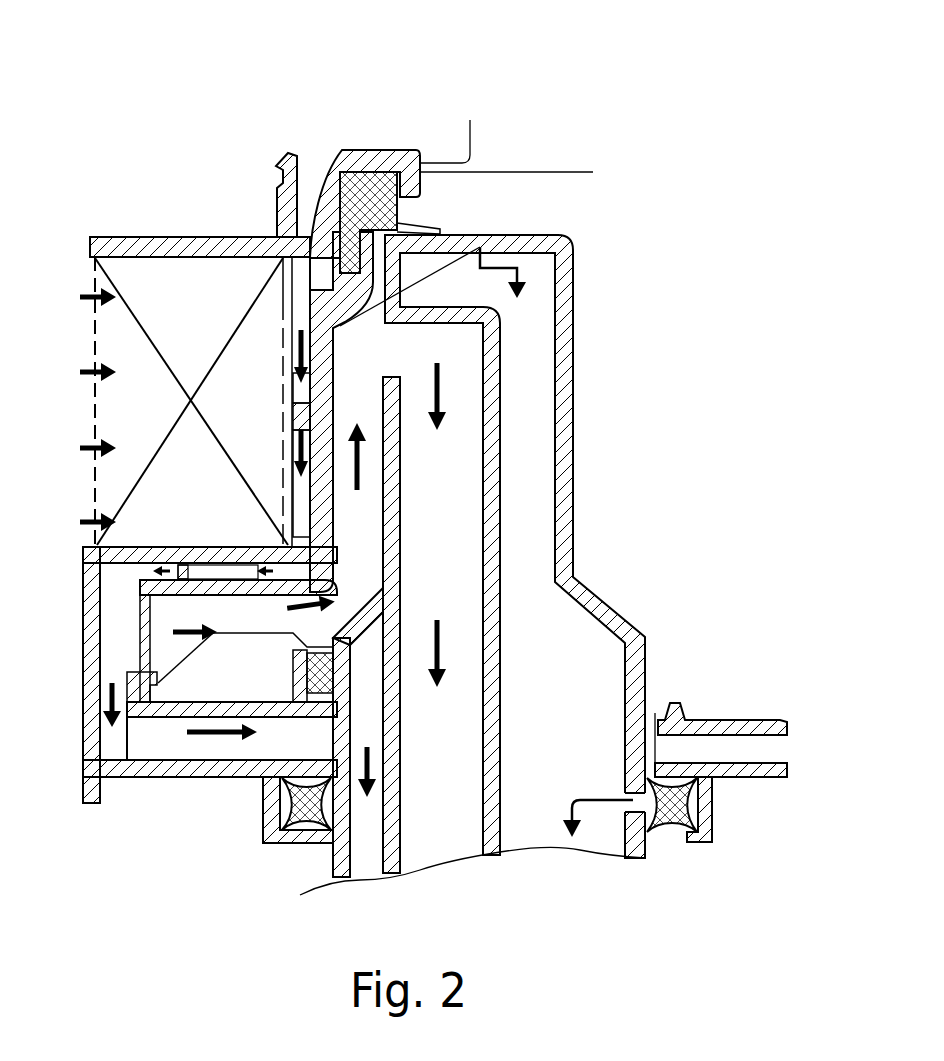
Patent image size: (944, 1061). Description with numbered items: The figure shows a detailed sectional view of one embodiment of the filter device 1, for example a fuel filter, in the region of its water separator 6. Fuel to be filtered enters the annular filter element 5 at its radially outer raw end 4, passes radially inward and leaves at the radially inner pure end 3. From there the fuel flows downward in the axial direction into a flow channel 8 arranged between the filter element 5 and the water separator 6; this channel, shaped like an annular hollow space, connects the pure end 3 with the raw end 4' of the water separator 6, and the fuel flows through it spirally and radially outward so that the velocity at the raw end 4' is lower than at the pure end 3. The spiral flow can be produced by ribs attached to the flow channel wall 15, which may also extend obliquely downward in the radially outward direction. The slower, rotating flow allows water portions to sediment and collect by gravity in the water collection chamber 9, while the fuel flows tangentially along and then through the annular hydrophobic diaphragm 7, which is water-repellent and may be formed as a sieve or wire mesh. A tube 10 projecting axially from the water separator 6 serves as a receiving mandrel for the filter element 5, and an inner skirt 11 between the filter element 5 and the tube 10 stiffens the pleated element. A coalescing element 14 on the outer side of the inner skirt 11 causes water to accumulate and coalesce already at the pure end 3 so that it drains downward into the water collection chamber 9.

The filter device 1 is at (519, 102).
The pure end 3 is at (287, 440).
The raw end 4 is at (163, 401).
The raw end of the water separator 4' is at (187, 675).
The filter element 5 is at (545, 237).
The water separator 6 is at (108, 646).
The diaphragm 7 is at (150, 626).
The flow channel 8 is at (186, 565).
The water collection chamber 9 is at (148, 746).
The tube 10 is at (572, 418).
The inner skirt 11 is at (290, 363).
The coalescing element 14 is at (292, 488).
The flow channel wall 15 is at (253, 578).